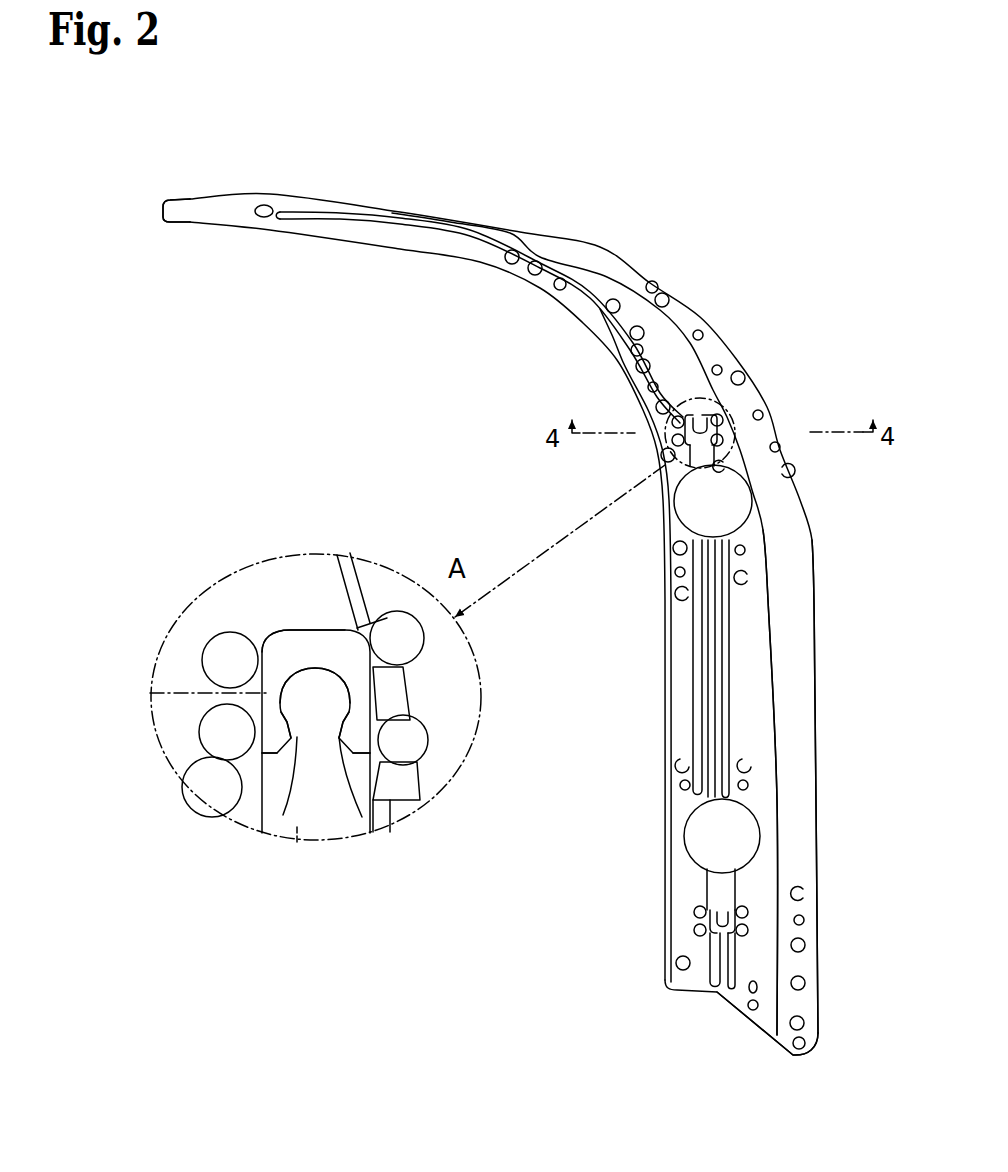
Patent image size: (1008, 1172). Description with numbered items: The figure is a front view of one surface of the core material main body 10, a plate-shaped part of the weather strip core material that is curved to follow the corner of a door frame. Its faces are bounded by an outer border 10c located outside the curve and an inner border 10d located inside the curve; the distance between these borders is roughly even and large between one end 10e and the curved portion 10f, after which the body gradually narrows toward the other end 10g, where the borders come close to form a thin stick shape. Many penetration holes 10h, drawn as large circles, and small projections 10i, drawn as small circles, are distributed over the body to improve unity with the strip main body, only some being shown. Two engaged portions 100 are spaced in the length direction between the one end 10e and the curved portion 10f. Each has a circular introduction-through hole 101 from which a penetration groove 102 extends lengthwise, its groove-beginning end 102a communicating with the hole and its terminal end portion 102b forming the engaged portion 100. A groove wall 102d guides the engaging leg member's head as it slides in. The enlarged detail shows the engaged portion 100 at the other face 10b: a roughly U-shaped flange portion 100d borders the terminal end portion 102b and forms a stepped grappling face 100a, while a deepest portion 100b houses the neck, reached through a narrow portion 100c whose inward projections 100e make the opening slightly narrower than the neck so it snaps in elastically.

The core material main body 10 is at (607, 260).
The other face 10b is at (800, 590).
The outer border 10c is at (816, 700).
The inner border 10d is at (663, 660).
The one end 10e is at (760, 1027).
The curved portion 10f is at (737, 343).
The other end 10g is at (162, 208).
The penetration holes 10h is at (635, 365).
The small projections 10i is at (698, 330).
The engaged portion 100 is at (683, 920).
The grappling face 100a is at (280, 647).
The deepest portion 100b is at (320, 668).
The narrow portion 100c is at (320, 790).
The flange portion 100d is at (275, 700).
The projections 100e is at (277, 803).
The introduction-through hole 101 is at (752, 503).
The penetration groove 102 is at (713, 887).
The groove-beginning end 102a is at (693, 477).
The terminal end portion 102b is at (313, 628).
The groove wall 102d is at (250, 807).